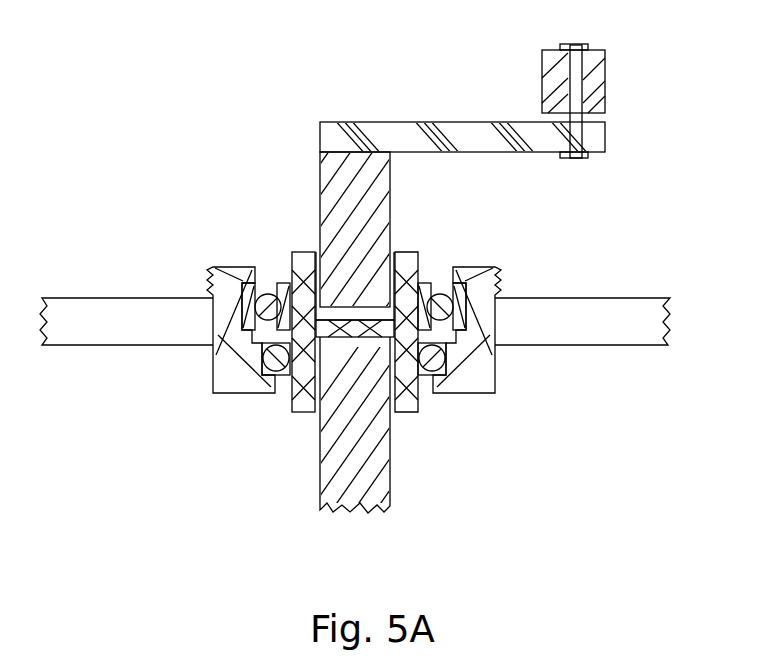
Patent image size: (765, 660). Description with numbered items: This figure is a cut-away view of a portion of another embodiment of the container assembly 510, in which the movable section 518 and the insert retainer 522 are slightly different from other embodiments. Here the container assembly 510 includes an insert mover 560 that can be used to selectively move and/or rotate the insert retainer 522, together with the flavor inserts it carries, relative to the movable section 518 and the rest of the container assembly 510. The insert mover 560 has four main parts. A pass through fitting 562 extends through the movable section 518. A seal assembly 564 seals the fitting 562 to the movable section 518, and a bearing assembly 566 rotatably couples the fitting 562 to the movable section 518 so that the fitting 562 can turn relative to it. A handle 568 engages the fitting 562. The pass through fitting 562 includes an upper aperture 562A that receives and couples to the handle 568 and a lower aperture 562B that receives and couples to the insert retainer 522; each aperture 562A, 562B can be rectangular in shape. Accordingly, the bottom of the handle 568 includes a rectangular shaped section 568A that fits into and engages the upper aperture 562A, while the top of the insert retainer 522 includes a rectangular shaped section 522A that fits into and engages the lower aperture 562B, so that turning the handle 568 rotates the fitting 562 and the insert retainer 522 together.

The container assembly 510 is at (368, 80).
The insert mover 560 is at (462, 89).
The handle 568 is at (615, 101).
The rectangular shaped section 568A is at (357, 308).
The pass through fitting 562 is at (284, 295).
The upper aperture 562A is at (459, 273).
The lower aperture 562B is at (481, 386).
The rectangular shaped section 522A is at (305, 415).
The insert retainer 522 is at (357, 308).
The movable section 518 is at (355, 275).
The seal assembly 564 is at (320, 360).
The bearing assembly 566 is at (293, 319).